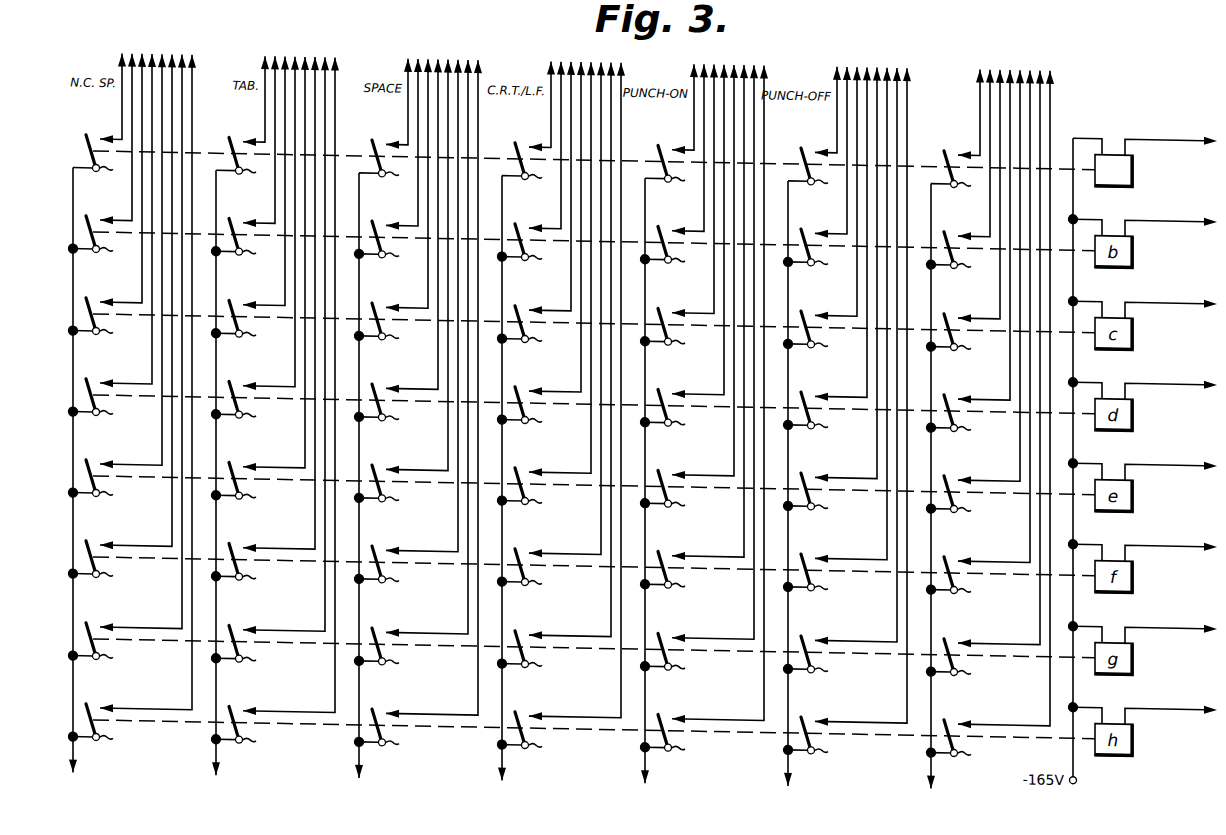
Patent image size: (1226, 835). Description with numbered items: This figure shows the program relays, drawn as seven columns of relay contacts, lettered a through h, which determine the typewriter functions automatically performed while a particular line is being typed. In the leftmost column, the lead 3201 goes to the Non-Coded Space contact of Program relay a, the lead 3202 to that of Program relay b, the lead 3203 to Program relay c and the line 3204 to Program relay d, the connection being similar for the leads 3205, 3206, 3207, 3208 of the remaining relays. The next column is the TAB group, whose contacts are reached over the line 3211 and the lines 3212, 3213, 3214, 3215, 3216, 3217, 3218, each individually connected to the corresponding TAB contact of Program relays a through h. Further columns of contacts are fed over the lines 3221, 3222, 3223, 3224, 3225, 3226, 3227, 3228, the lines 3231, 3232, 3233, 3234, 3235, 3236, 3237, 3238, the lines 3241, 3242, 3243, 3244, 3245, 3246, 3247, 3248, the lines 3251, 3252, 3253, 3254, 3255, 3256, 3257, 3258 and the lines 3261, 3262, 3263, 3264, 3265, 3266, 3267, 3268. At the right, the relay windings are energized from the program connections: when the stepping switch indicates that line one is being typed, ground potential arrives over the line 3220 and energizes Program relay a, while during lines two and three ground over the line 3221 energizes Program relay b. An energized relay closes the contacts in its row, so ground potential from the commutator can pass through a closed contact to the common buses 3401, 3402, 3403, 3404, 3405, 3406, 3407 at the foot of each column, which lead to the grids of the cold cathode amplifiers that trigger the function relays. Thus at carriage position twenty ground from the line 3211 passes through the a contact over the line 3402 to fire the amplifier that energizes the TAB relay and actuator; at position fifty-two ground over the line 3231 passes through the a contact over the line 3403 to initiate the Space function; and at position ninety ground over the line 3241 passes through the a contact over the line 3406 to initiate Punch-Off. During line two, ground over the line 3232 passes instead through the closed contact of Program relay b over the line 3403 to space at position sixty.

The lead 3201 is at (122, 117).
The lead 3202 is at (132, 198).
The lead 3203 is at (142, 280).
The line 3204 is at (152, 361).
The N.C. SP. key contact e 3205 is at (162, 442).
The N.C. SP. key contact f 3206 is at (172, 523).
The N.C. SP. key contact g 3207 is at (182, 605).
The N.C. SP. key contact h 3208 is at (192, 686).
The line 3211 is at (265, 117).
The TAB key contact b 3212 is at (275, 198).
The TAB key contact c 3213 is at (285, 280).
The TAB key contact d 3214 is at (295, 361).
The TAB key contact e 3215 is at (305, 442).
The TAB key contact f 3216 is at (315, 523).
The TAB key contact g 3217 is at (325, 605).
The TAB key contact h 3218 is at (335, 686).
The line 3221 is at (408, 117).
The SPACE key contact b / code output lead c 3222 is at (418, 198).
The SPACE key contact c / code output lead d 3223 is at (428, 280).
The SPACE key contact d / code output lead e 3224 is at (438, 361).
The SPACE key contact e / code output lead f 3225 is at (448, 442).
The SPACE key contact f / code output lead g 3226 is at (458, 523).
The SPACE key contact g / code output lead h 3227 is at (468, 605).
The SPACE key contact h 3228 is at (478, 686).
The line 3231 is at (551, 117).
The line 3232 is at (561, 198).
The C.R.T./L.F. key contact c 3233 is at (571, 280).
The C.R.T./L.F. key contact d 3234 is at (581, 361).
The C.R.T./L.F. key contact e 3235 is at (591, 442).
The C.R.T./L.F. key contact f 3236 is at (601, 523).
The C.R.T./L.F. key contact g 3237 is at (611, 605).
The C.R.T./L.F. key contact h 3238 is at (621, 686).
The line 3241 is at (694, 117).
The PUNCH-ON key contact b 3242 is at (704, 198).
The PUNCH-ON key contact c 3243 is at (714, 280).
The PUNCH-ON key contact d 3244 is at (724, 361).
The PUNCH-ON key contact e 3245 is at (734, 442).
The PUNCH-ON key contact f 3246 is at (744, 523).
The PUNCH-ON key contact g 3247 is at (754, 605).
The PUNCH-ON key contact h 3248 is at (764, 686).
The PUNCH-OFF key contact a 3251 is at (837, 117).
The PUNCH-OFF key contact b 3252 is at (847, 198).
The PUNCH-OFF key contact c 3253 is at (857, 280).
The PUNCH-OFF key contact d 3254 is at (867, 361).
The PUNCH-OFF key contact e 3255 is at (877, 442).
The PUNCH-OFF key contact f 3256 is at (887, 523).
The PUNCH-OFF key contact g 3257 is at (897, 605).
The PUNCH-OFF key contact h 3258 is at (907, 686).
The key contact a 3261 is at (980, 117).
The key contact b 3262 is at (990, 198).
The key contact c 3263 is at (1000, 280).
The key contact d 3264 is at (1010, 361).
The key contact e 3265 is at (1020, 442).
The key contact f 3266 is at (1030, 523).
The key contact g 3267 is at (1040, 605).
The key contact h 3268 is at (1050, 686).
The N.C. SP. key common bus 3401 is at (73, 748).
The line 3402 is at (216, 748).
The line 3403 is at (359, 748).
The C.R.T./L.F. key common bus 3404 is at (502, 748).
The PUNCH-ON key common bus 3405 is at (645, 748).
The line 3406 is at (788, 748).
The key common bus 3407 is at (931, 748).
The line 3220 is at (1146, 120).